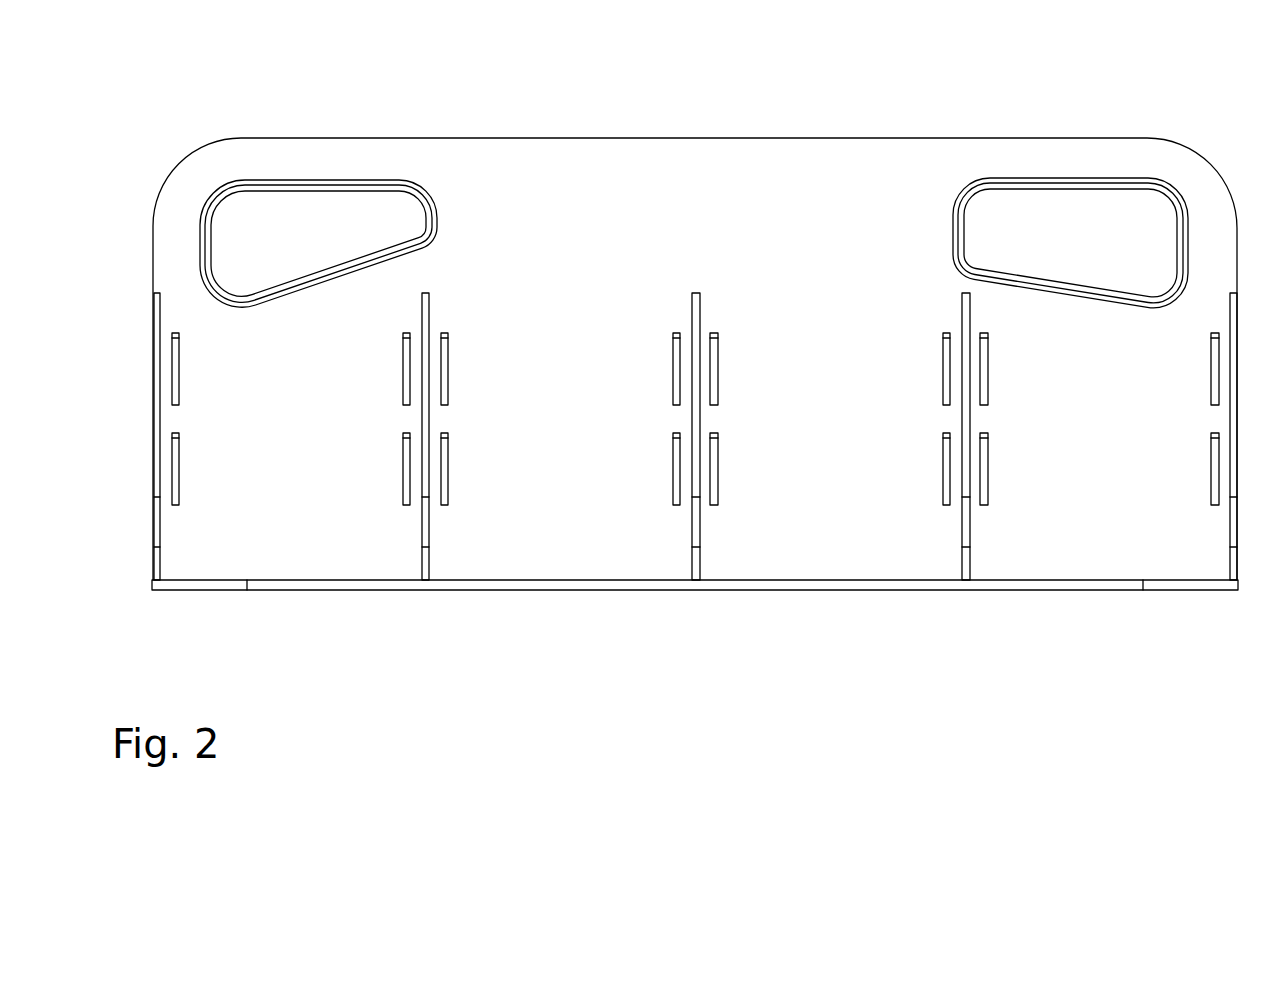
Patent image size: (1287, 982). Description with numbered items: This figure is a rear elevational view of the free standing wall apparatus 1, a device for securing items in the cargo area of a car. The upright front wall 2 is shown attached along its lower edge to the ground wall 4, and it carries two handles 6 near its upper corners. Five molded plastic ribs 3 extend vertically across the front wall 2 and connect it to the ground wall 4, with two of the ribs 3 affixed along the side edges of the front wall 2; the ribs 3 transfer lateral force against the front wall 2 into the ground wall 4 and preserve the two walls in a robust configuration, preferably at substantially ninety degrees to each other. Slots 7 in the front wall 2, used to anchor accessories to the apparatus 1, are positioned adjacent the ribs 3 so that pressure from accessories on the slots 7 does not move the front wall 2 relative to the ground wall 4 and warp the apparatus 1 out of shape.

The free standing wall apparatus 1 is at (260, 59).
The front wall 2 is at (898, 183).
The molded plastic ribs 3 is at (162, 393).
The ground wall 4 is at (643, 590).
The handles 6 is at (308, 247).
The slots 7 is at (673, 350).